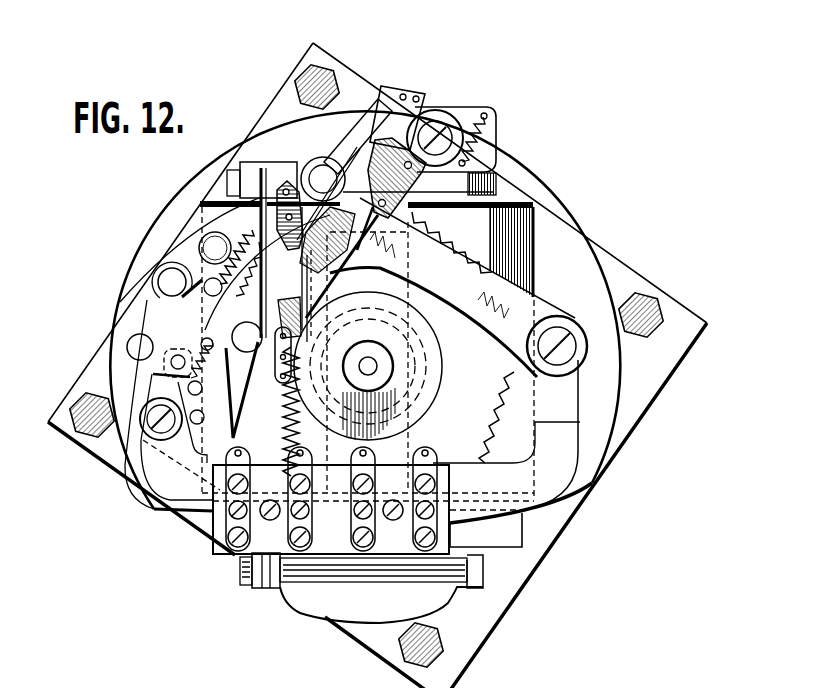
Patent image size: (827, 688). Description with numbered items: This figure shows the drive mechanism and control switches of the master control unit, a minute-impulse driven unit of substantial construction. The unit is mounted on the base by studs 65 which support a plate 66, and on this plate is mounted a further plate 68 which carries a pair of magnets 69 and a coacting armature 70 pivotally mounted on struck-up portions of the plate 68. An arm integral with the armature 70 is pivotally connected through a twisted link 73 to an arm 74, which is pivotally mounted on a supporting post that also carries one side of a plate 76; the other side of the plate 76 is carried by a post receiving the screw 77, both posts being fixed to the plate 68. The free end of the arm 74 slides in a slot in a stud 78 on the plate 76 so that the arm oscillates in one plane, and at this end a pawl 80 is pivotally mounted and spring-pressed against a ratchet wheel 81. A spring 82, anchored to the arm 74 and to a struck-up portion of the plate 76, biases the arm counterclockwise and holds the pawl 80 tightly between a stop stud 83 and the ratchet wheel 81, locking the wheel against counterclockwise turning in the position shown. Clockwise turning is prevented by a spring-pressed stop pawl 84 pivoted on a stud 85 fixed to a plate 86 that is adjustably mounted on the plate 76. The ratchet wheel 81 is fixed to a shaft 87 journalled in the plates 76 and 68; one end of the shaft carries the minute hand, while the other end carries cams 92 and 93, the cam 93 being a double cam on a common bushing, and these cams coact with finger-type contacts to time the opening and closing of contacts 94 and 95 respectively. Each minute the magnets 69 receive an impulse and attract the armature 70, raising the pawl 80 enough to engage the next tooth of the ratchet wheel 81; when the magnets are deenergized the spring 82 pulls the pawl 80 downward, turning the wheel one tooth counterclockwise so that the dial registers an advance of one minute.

The studs 65 is at (328, 74).
The plate 66 is at (631, 277).
The plate 68 is at (552, 207).
The magnets 69 is at (522, 250).
The armature 70 is at (507, 537).
The twisted link 73 is at (233, 437).
The arm 74 is at (466, 307).
The plate 76 is at (147, 302).
The screw 77 is at (148, 410).
The stud 78 is at (128, 342).
The pawl 80 is at (164, 360).
The ratchet wheel 81 is at (494, 434).
The spring 82 is at (293, 437).
The stop stud 83 is at (193, 421).
The stop pawl 84 is at (203, 277).
The stud 85 is at (203, 233).
The plate 86 is at (170, 265).
The shaft 87 is at (370, 366).
The cam 92 is at (432, 406).
The cam 93 is at (369, 313).
The contacts 94 is at (322, 262).
The contacts 95 is at (258, 352).